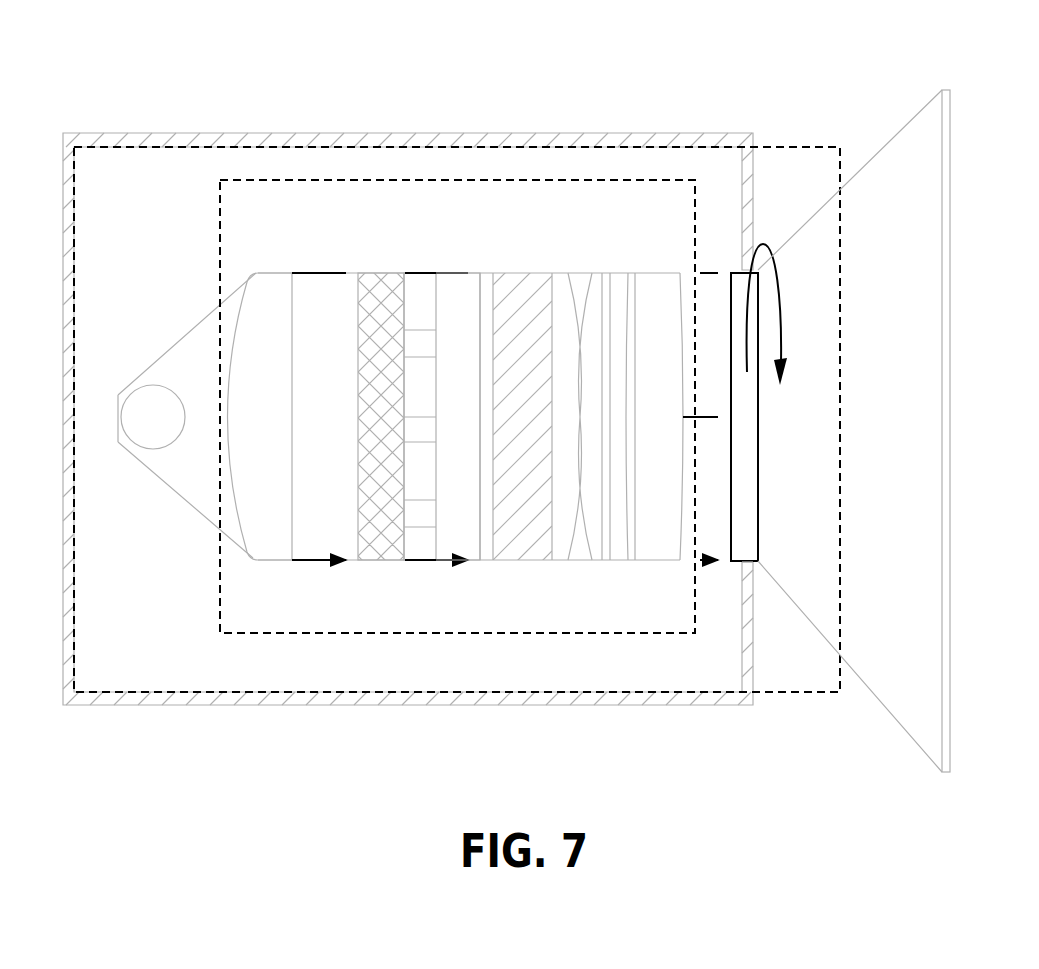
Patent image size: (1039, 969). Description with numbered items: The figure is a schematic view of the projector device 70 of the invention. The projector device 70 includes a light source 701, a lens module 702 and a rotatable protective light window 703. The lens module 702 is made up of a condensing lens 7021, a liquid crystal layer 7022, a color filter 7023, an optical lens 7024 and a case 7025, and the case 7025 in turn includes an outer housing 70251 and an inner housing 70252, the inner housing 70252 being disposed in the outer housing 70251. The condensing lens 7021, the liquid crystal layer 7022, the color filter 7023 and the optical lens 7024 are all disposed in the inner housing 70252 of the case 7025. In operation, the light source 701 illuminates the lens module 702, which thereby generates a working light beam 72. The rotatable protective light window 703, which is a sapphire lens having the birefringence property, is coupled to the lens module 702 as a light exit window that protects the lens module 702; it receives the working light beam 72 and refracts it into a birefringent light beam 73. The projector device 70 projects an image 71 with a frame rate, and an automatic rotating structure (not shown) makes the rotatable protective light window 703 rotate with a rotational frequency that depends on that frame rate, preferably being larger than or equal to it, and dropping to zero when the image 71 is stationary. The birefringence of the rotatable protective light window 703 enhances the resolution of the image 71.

The projector device 70 is at (97, 200).
The light source 701 is at (143, 386).
The lens module 702 is at (366, 72).
The condensing lens 7021 is at (275, 276).
The liquid crystal layer 7022 is at (368, 277).
The color filter 7023 is at (420, 277).
The optical lens 7024 is at (517, 275).
The case 7025 is at (673, 301).
The outer housing 70251 is at (608, 88).
The inner housing 70252 is at (643, 203).
The working light beam 72 is at (700, 270).
The rotatable protective light window 703 is at (738, 563).
The birefringent light beam 73 is at (891, 140).
The image 71 is at (945, 305).